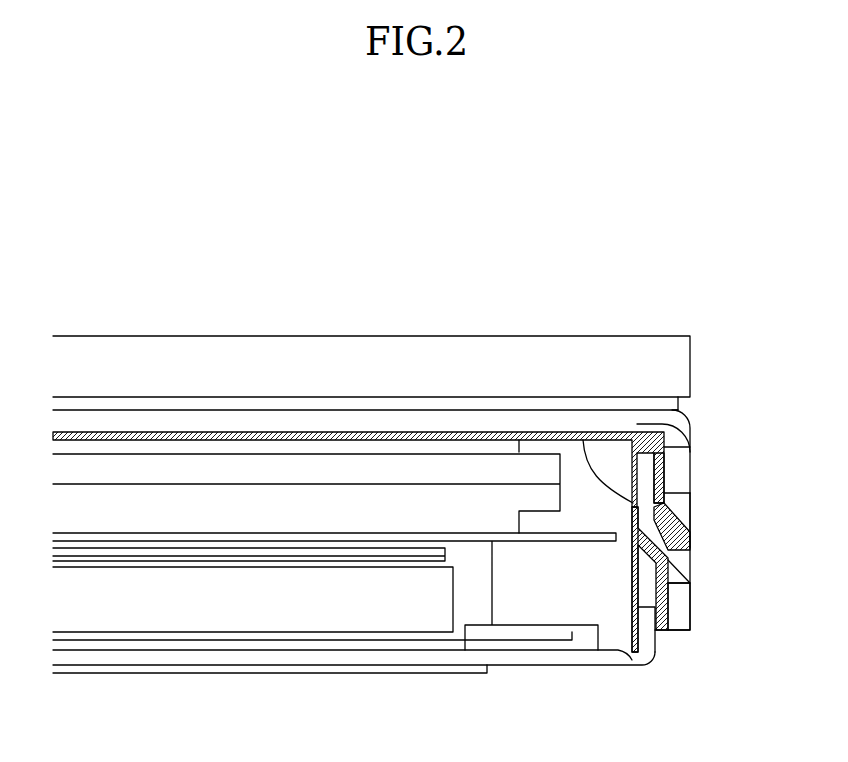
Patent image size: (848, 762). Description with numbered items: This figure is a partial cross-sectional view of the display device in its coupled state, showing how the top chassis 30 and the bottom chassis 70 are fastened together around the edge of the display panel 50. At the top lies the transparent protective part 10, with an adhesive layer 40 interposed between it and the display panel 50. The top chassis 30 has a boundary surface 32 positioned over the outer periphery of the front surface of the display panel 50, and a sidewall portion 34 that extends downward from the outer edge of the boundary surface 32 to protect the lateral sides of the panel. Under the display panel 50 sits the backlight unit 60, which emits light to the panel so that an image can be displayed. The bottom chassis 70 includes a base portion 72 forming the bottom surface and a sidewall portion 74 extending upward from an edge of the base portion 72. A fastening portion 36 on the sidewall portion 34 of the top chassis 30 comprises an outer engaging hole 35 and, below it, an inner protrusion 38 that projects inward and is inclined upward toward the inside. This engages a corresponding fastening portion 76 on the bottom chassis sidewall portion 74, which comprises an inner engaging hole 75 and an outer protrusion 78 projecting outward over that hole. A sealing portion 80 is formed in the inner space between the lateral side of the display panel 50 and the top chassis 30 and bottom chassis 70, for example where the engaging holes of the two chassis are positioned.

The transparent protective part 10 is at (566, 358).
The boundary surface 32 is at (606, 420).
The top chassis 30 is at (691, 482).
The sidewall portion 34 is at (677, 458).
The sealing portion 80 is at (656, 435).
The corresponding fastening portion 76 is at (663, 447).
The outer protrusion 78 is at (690, 535).
The adhesive layer 40 is at (665, 497).
The inner protrusion 38 is at (665, 590).
The outer engaging hole 35 is at (663, 563).
The fastening portion 36 is at (677, 617).
The sidewall portion 74 is at (647, 638).
The inner engaging hole 75 is at (623, 545).
The bottom chassis 70 is at (645, 665).
The base portion 72 is at (553, 662).
The display panel 50 is at (322, 512).
The backlight unit 60 is at (207, 610).